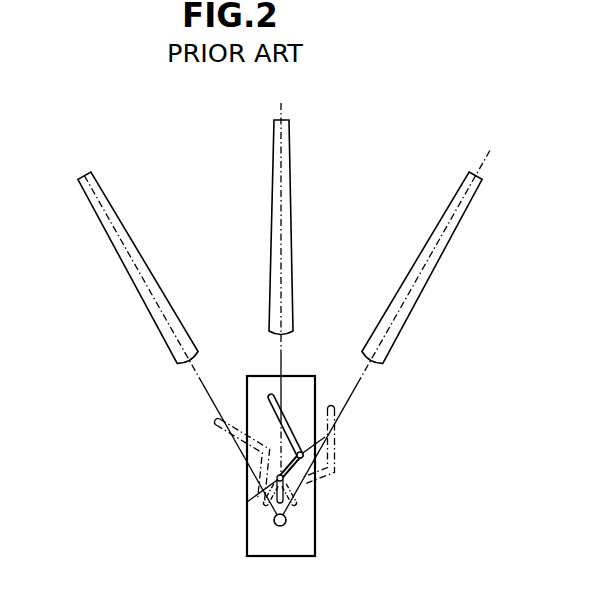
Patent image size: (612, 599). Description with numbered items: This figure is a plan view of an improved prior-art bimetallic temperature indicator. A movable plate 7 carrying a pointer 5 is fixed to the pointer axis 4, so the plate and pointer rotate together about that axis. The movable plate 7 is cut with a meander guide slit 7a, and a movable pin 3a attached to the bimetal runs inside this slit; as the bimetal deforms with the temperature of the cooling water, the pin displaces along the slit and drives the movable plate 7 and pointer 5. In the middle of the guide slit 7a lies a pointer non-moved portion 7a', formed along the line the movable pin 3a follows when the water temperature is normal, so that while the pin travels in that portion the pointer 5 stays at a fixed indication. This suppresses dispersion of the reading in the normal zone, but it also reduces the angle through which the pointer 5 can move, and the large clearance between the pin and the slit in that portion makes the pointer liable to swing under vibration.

The pointer 5 is at (291, 198).
The movable plate 7 is at (252, 536).
The meander guide slit 7a is at (308, 391).
The pointer non-moved portion of the slit 7a' is at (350, 455).
The movable pin 3a is at (247, 477).
The pointer axis 4 is at (286, 524).